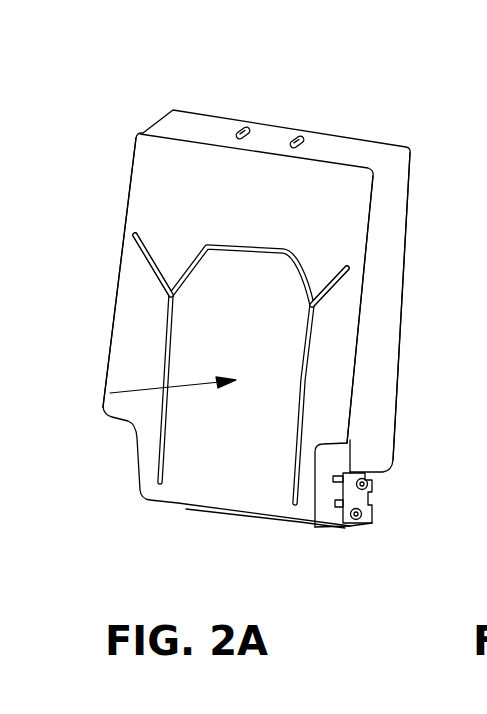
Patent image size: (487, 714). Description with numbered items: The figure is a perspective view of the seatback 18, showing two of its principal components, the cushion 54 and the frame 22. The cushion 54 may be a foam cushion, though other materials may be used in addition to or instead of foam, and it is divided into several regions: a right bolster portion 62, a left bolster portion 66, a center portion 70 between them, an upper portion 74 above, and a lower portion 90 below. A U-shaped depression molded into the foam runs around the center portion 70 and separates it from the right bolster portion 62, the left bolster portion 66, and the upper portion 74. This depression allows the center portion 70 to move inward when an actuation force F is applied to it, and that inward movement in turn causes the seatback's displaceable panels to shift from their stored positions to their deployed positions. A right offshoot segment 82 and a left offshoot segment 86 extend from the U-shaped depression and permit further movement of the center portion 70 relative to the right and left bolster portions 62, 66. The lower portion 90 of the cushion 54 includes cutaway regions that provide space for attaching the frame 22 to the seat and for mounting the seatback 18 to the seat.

The seatback 18 is at (348, 150).
The frame 22 is at (360, 495).
The cushion 54 is at (190, 163).
The right bolster portion 62 is at (123, 317).
The left bolster portion 66 is at (330, 383).
The center portion 70 is at (237, 360).
The upper portion 74 is at (258, 190).
The right offshoot segment 82 is at (130, 262).
The left offshoot segment 86 is at (342, 268).
The lower portion 90 is at (268, 478).
The actuation force F is at (182, 387).